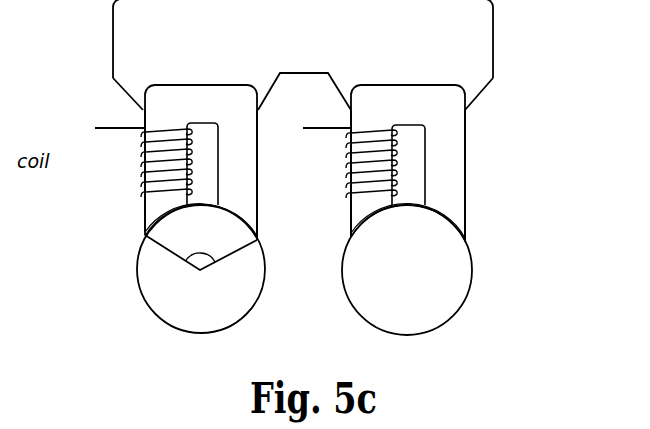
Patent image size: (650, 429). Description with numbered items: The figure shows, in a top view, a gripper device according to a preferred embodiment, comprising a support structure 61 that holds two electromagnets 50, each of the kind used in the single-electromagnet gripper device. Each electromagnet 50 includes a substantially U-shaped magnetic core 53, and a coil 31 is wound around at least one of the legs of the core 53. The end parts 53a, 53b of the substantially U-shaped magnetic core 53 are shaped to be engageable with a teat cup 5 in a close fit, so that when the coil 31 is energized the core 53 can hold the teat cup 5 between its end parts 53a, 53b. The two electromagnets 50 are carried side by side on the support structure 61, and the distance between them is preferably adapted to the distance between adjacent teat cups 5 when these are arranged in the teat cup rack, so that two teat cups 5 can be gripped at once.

The support structure 61 is at (493, 33).
The magnetic core 53 is at (143, 112).
The end part of the magnetic core 53a is at (145, 223).
The end part of the magnetic core 53b is at (258, 224).
The coil 31 is at (145, 198).
The teat cup 5 is at (140, 302).
The electromagnet 50 is at (510, 167).